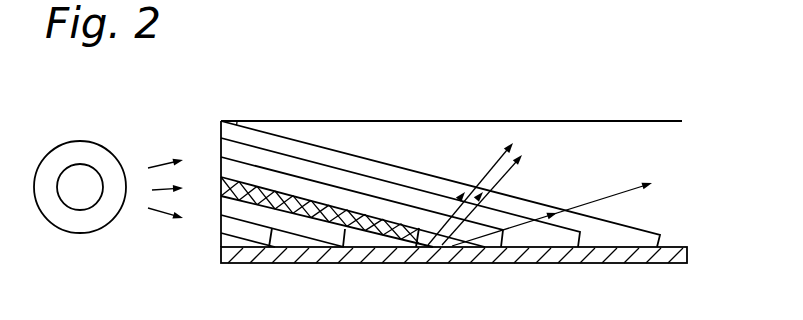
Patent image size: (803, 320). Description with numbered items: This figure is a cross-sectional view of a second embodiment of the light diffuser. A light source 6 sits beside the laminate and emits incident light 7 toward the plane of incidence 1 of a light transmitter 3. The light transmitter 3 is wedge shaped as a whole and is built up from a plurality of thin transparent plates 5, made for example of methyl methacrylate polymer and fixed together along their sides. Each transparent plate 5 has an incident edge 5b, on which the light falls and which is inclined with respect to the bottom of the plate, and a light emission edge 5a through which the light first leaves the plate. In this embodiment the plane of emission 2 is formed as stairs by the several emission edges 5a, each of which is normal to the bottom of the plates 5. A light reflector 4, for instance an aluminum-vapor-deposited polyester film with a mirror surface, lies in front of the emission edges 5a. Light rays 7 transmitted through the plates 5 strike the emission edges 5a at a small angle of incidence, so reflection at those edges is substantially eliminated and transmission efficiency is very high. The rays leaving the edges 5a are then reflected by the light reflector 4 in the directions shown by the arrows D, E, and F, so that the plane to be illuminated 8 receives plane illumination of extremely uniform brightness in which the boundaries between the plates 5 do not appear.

The plane of incidence of light 1 is at (214, 181).
The plane of emission of light 2 is at (428, 109).
The light transmitter 3 is at (368, 143).
The light reflector 4 is at (578, 263).
The transparent plate 5 is at (290, 225).
The light emission edge 5a is at (349, 232).
The light incident edge 5b is at (219, 208).
The light source 6 is at (80, 233).
The incident light 7 is at (163, 190).
The plane to be illuminated 8 is at (574, 120).
The arrow D is at (490, 170).
The arrow E is at (508, 171).
The arrow F is at (627, 191).